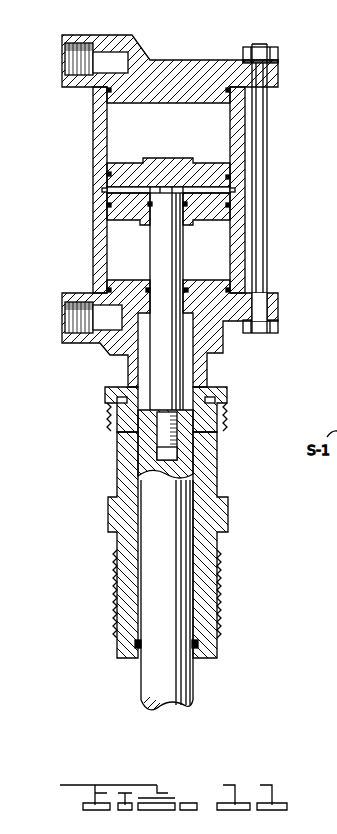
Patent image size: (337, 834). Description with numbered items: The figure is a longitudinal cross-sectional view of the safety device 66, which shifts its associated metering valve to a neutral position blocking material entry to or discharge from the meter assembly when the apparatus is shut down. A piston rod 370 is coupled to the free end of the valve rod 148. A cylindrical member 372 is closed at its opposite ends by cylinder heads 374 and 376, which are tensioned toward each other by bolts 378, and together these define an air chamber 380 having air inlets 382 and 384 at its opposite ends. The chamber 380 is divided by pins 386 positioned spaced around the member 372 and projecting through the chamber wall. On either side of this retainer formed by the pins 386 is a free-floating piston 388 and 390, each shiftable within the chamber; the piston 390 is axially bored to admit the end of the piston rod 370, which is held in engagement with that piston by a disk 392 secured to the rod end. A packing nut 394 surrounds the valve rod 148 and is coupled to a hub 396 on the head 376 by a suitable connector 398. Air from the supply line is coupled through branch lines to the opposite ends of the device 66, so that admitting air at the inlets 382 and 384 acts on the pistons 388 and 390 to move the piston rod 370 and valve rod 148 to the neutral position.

The cylinder head 374 is at (202, 70).
The air inlet 382 is at (131, 104).
The air chamber 380 is at (200, 143).
The free-floating piston 388 is at (122, 170).
The disk 392 is at (130, 192).
The pins 386 is at (120, 193).
The free-floating piston 390 is at (120, 212).
The cylindrical member 372 is at (142, 190).
The bolts 378 is at (260, 210).
The air inlet 384 is at (131, 288).
The cylinder head 376 is at (213, 337).
The piston rod 370 is at (170, 370).
The hub 396 is at (127, 365).
The connector 398 is at (223, 422).
The packing nut 394 is at (222, 513).
The safety device 66 is at (100, 505).
The valve rod 148 is at (173, 683).